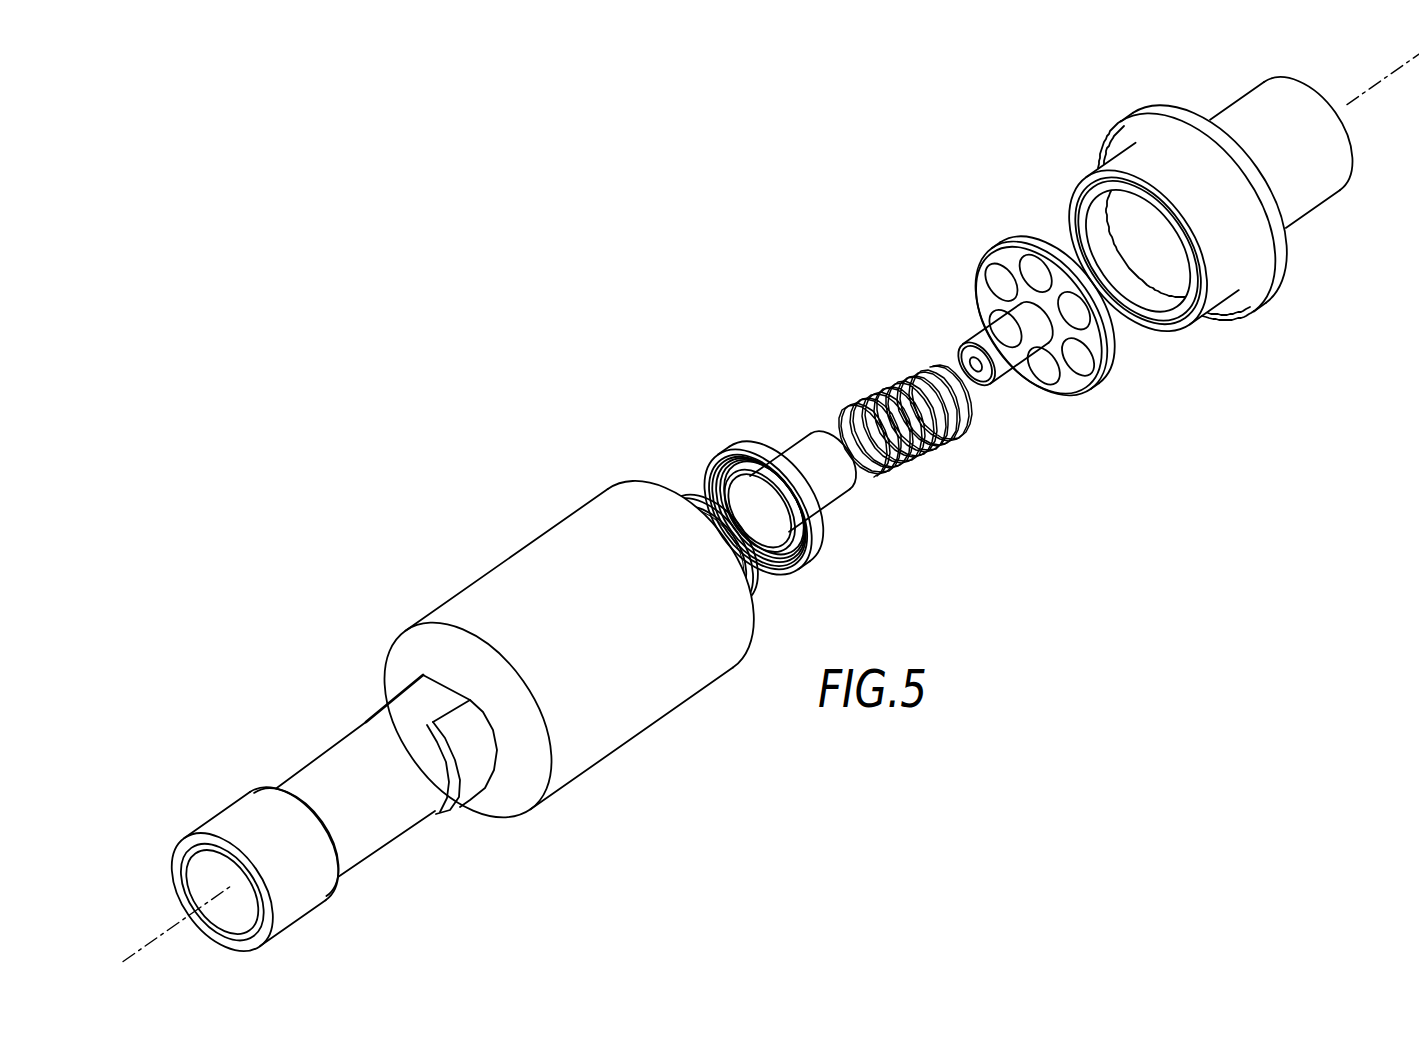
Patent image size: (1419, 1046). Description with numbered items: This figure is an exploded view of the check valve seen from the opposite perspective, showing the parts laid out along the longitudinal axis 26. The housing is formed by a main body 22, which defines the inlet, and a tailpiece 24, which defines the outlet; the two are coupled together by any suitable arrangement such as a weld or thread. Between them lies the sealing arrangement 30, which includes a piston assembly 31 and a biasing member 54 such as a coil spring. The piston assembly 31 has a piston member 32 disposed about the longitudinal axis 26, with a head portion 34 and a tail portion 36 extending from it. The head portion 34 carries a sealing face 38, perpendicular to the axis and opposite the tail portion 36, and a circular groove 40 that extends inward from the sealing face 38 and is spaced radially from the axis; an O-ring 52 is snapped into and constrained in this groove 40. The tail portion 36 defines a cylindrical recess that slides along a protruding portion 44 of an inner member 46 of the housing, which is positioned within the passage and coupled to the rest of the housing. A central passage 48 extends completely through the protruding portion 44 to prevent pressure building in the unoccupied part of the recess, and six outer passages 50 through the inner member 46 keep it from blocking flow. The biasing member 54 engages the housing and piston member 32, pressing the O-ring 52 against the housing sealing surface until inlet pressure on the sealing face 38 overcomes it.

The main body 22 is at (380, 618).
The tailpiece 24 is at (1108, 117).
The longitudinal axis 26 is at (164, 930).
The sealing arrangement 30 is at (716, 456).
The piston assembly 31 is at (800, 582).
The piston member 32 is at (775, 485).
The head portion 34 is at (818, 541).
The tail portion 36 is at (835, 485).
The sealing face 38 is at (743, 488).
The circular groove 40 is at (788, 577).
The protruding portion 44 is at (985, 360).
The inner member 46 is at (1038, 346).
The central passage 48 is at (977, 372).
The outer passages 50 is at (1003, 274).
The O-ring 52 is at (750, 610).
The biasing member 54 is at (927, 460).